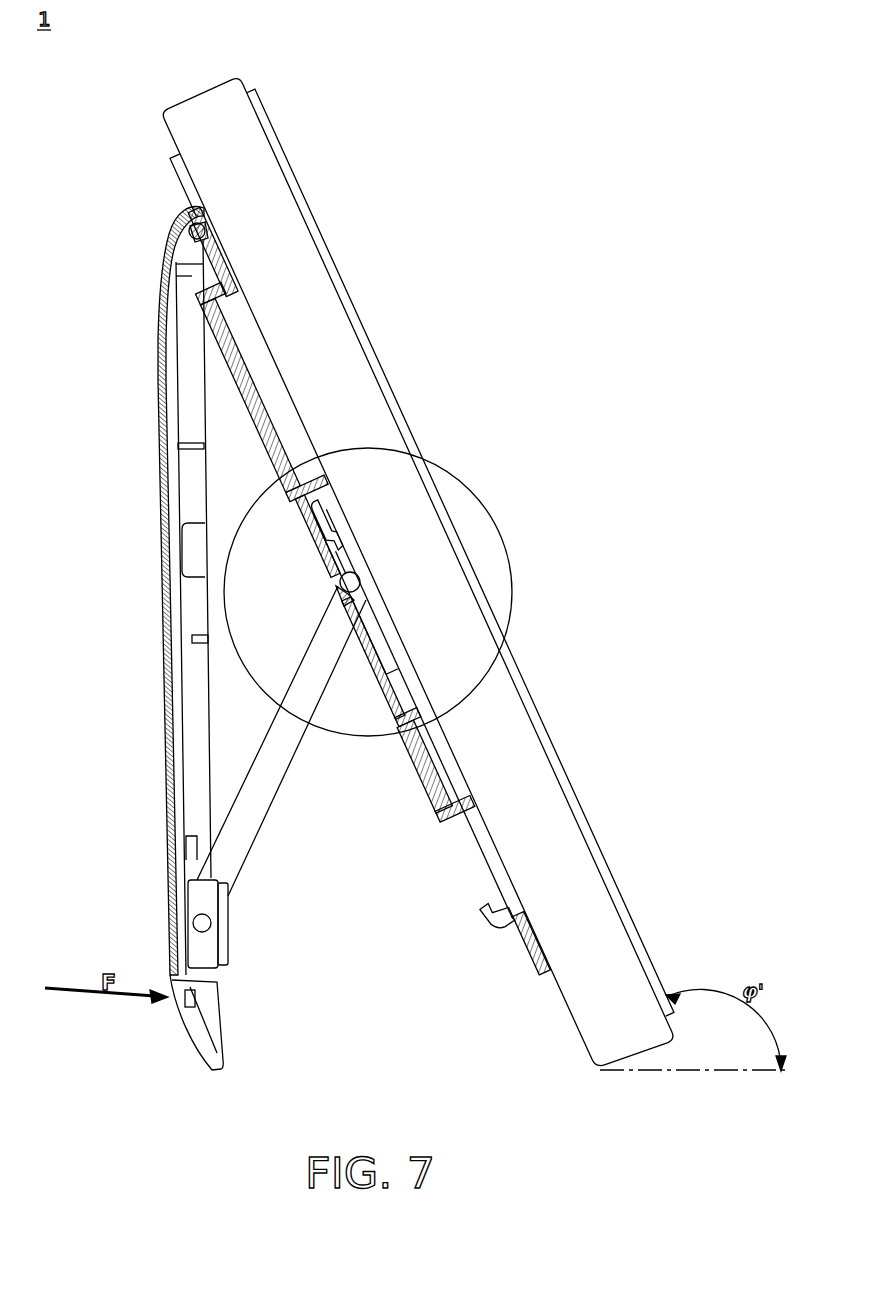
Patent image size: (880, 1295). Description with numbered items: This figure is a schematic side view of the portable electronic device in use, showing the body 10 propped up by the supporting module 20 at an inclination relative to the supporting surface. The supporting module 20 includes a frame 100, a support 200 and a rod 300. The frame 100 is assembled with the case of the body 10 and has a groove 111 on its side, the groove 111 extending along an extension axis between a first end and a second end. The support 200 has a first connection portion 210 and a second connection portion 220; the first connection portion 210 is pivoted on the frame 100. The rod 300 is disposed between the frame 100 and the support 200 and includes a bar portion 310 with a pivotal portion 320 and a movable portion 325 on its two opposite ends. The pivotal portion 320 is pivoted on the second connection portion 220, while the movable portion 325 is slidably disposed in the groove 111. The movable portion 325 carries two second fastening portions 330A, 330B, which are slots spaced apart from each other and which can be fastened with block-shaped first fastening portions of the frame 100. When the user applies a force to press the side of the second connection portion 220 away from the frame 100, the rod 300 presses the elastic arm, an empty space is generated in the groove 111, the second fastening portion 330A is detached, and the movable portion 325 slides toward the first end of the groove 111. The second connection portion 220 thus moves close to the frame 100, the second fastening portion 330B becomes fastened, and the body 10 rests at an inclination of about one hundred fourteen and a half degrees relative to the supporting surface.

The body 10 is at (305, 101).
The supporting module 20 is at (214, 628).
The frame 100 is at (356, 571).
The groove 111 is at (390, 636).
The support 200 is at (150, 575).
The first connection portion 210 is at (179, 220).
The second connection portion 220 is at (197, 1040).
The rod 300 is at (246, 767).
The bar portion 310 is at (255, 818).
The pivotal portion 320 is at (195, 923).
The movable portion 325 is at (358, 580).
The second fastening portion 330A is at (340, 598).
The second fastening portion 330B is at (338, 590).